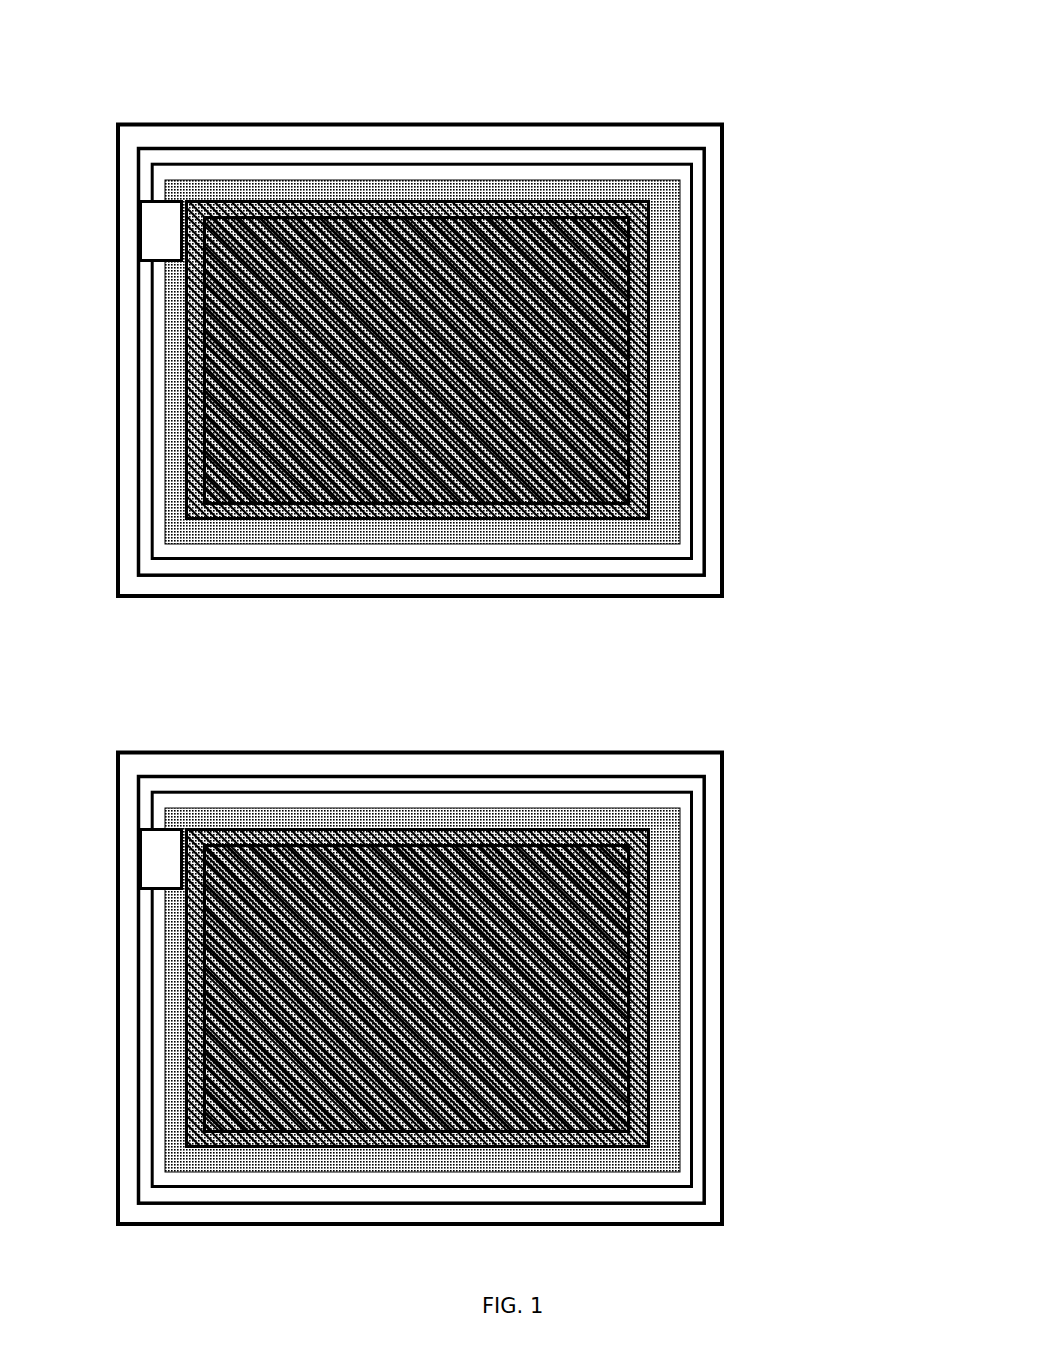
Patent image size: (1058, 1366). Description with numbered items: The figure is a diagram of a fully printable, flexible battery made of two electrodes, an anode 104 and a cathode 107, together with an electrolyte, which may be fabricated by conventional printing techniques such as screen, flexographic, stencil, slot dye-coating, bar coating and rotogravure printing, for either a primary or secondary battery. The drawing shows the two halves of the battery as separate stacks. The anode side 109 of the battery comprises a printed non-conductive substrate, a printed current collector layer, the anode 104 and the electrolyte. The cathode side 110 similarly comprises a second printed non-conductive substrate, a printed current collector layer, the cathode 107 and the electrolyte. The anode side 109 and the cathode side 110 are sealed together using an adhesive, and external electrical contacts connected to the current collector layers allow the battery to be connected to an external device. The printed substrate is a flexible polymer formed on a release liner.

The anode 104 is at (630, 381).
The cathode 107 is at (630, 1009).
The anode side 109 is at (503, 305).
The cathode side 110 is at (503, 934).